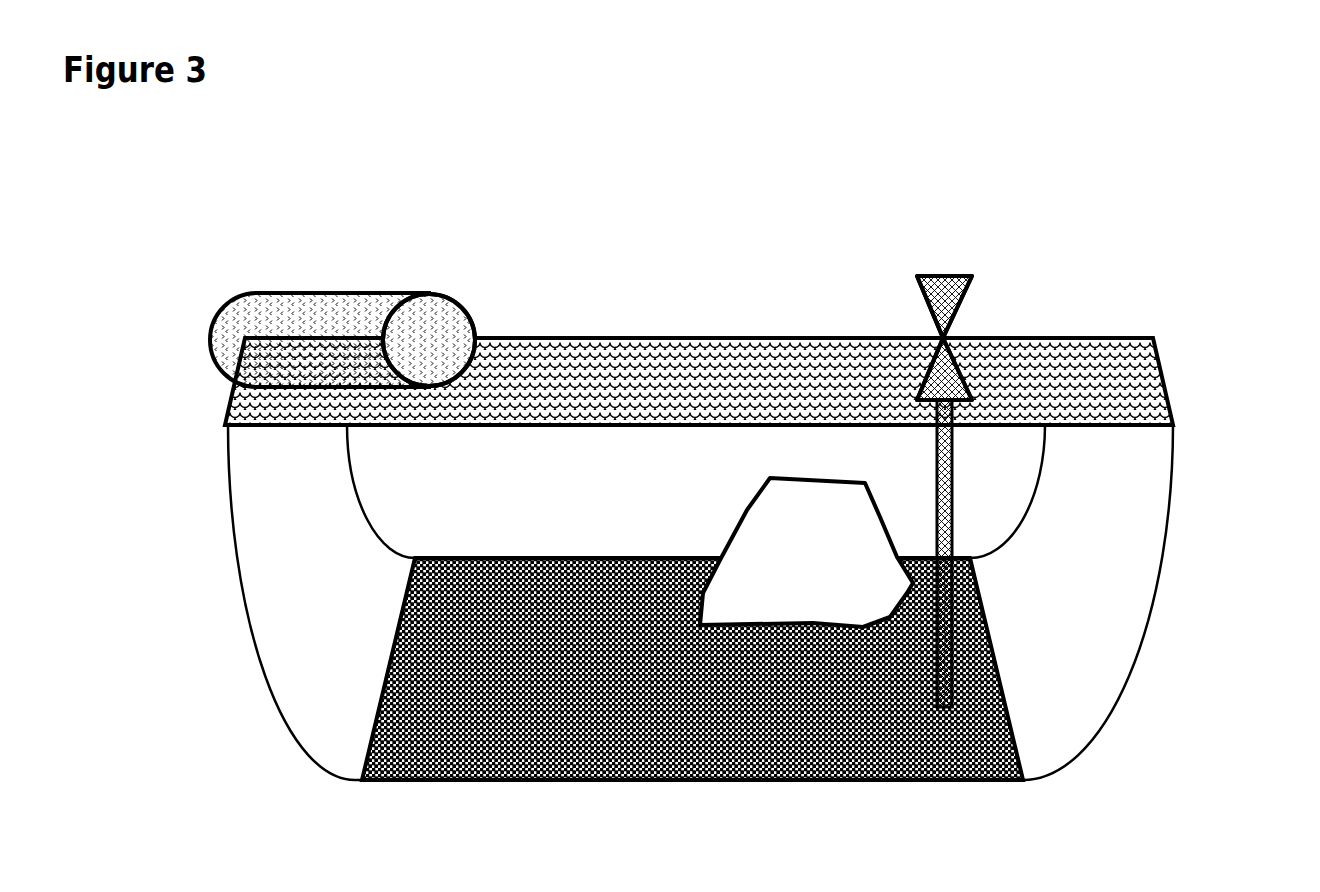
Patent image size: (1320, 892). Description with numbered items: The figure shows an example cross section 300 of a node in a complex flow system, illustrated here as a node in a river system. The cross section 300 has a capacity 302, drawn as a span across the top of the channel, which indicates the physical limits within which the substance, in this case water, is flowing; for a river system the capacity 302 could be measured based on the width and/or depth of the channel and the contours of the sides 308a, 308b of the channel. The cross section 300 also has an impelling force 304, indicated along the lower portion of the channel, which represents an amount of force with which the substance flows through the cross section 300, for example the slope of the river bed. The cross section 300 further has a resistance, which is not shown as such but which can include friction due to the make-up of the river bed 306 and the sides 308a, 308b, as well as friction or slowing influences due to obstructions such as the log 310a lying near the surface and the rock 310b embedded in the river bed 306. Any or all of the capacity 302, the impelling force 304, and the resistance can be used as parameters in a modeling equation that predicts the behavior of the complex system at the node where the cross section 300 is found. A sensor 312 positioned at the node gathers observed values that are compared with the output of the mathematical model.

The cross section 300 is at (1206, 121).
The capacity 302 is at (1173, 237).
The impelling force 304 is at (208, 560).
The river bed 306 is at (555, 722).
The side 308a is at (333, 572).
The side 308b is at (1115, 575).
The log 310a is at (342, 355).
The rock 310b is at (852, 572).
The sensor 312 is at (945, 293).